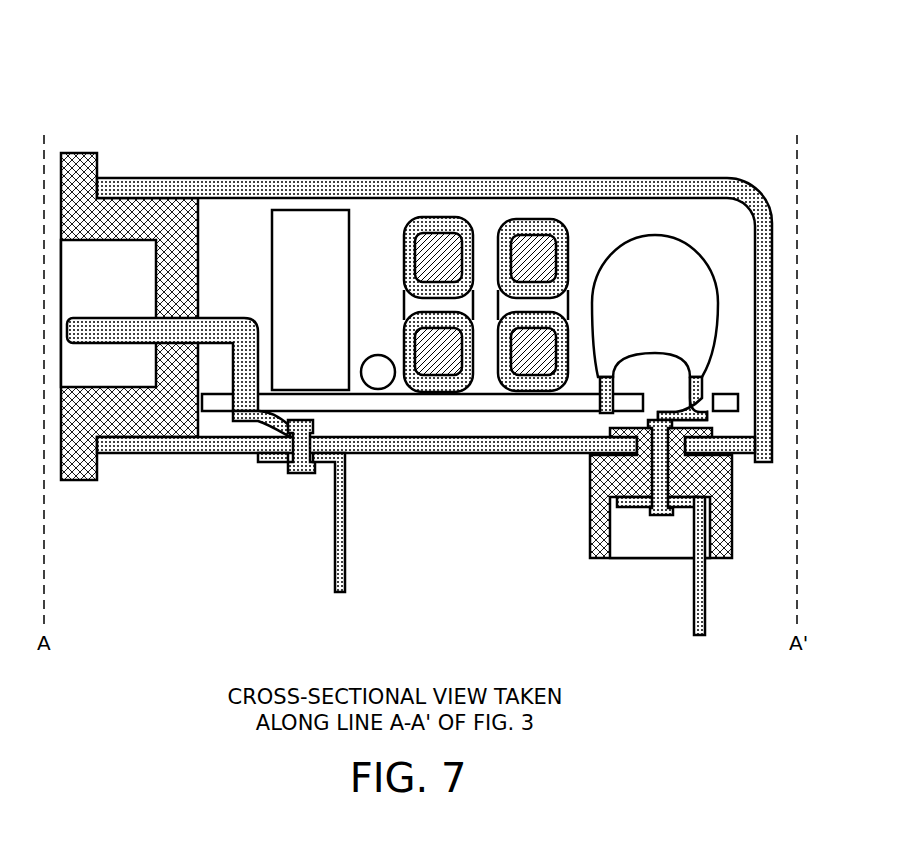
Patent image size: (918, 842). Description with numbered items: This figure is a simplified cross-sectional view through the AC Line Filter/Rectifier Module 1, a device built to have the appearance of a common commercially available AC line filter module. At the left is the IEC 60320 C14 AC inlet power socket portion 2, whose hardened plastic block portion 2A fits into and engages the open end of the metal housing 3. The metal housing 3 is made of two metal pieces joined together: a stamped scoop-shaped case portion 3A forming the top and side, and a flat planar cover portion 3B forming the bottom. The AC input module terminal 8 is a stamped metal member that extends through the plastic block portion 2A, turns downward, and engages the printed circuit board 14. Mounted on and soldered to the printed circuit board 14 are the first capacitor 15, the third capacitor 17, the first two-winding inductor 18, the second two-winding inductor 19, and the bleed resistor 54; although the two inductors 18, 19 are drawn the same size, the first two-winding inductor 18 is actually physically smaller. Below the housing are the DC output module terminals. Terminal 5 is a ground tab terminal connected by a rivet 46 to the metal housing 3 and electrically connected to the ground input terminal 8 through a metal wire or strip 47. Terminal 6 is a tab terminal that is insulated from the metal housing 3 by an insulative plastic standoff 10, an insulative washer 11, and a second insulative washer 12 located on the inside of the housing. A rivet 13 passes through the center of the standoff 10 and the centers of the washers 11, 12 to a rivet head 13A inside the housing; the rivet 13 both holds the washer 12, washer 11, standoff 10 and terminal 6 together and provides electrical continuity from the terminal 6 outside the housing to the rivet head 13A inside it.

The AC Line Filter/Rectifier Module 1 is at (828, 63).
The AC inlet power socket portion 2 is at (129, 296).
The hardened plastic block portion 2A is at (150, 226).
The metal housing 3 is at (469, 318).
The stamped scoop-shaped case portion 3A is at (403, 178).
The flat planar cover portion 3B is at (218, 455).
The DC output module terminal 5 is at (346, 558).
The DC output module terminal 6 is at (694, 607).
The AC input module terminal 8 is at (97, 318).
The insulative plastic standoff 10 is at (653, 484).
The insulative washer 11 is at (590, 460).
The second insulative washer 12 is at (635, 484).
The rivet 13 is at (662, 486).
The rivet head 13A is at (652, 413).
The printed circuit board 14 is at (345, 413).
The first capacitor 15 is at (323, 301).
The third capacitor 17 is at (655, 327).
The first two-winding inductor 18 is at (568, 241).
The second two-winding inductor 19 is at (404, 240).
The rivet 46 is at (303, 473).
The metal wire or strip 47 is at (244, 420).
The bleed resistor 54 is at (391, 383).